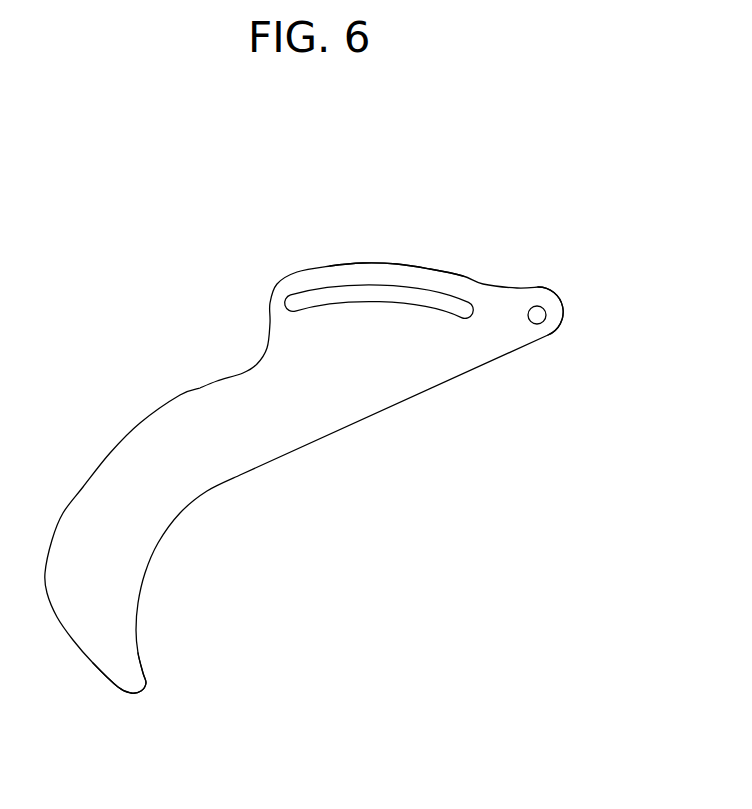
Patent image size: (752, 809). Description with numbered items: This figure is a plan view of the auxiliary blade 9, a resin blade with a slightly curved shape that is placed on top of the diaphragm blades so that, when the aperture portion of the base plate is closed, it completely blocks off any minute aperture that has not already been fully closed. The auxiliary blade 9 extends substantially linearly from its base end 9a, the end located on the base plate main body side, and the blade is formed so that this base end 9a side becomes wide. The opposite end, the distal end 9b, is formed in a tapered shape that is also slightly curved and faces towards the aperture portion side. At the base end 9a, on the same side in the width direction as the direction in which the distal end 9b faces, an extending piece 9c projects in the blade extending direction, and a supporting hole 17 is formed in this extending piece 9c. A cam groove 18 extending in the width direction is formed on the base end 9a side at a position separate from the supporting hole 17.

The auxiliary blade 9 is at (148, 378).
The base end 9a is at (397, 264).
The distal end 9b is at (137, 682).
The extending piece 9c is at (562, 312).
The supporting hole 17 is at (536, 306).
The cam groove 18 is at (348, 290).